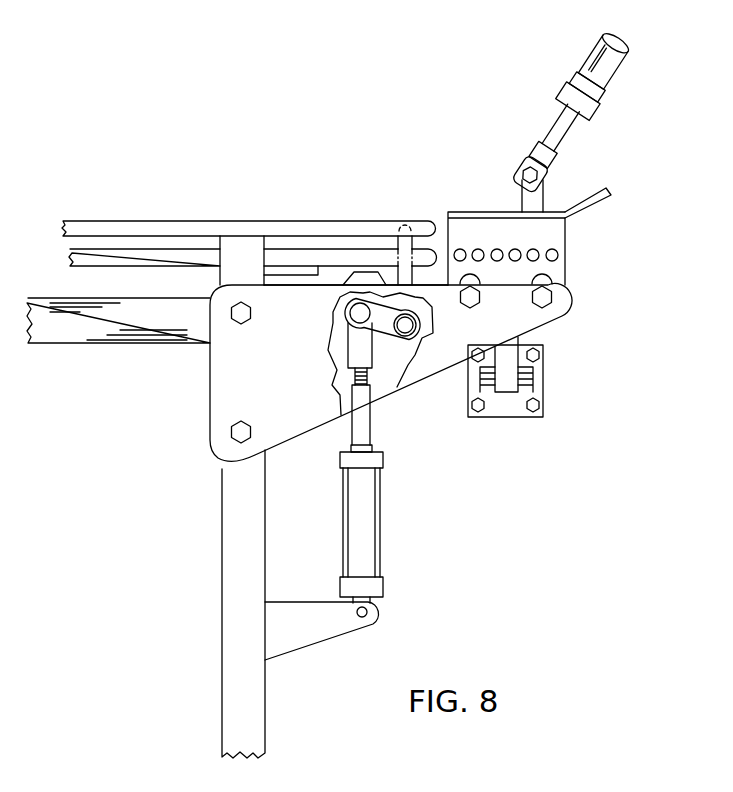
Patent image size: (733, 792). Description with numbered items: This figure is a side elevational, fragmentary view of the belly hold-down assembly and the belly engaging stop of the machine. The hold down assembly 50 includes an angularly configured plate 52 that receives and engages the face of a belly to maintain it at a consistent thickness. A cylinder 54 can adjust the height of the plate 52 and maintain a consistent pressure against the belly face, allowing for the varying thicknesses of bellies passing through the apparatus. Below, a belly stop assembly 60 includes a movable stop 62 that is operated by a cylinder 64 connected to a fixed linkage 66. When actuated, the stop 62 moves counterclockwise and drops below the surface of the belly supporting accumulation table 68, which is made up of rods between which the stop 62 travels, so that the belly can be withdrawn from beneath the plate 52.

The hold down assembly 50 is at (624, 196).
The angularly configured plate 52 is at (472, 210).
The cylinder 54 is at (583, 57).
The belly stop assembly 60 is at (372, 276).
The movable stop 62 is at (391, 242).
The cylinder 64 is at (372, 540).
The fixed linkage 66 is at (378, 338).
The accumulation table 68 is at (90, 258).